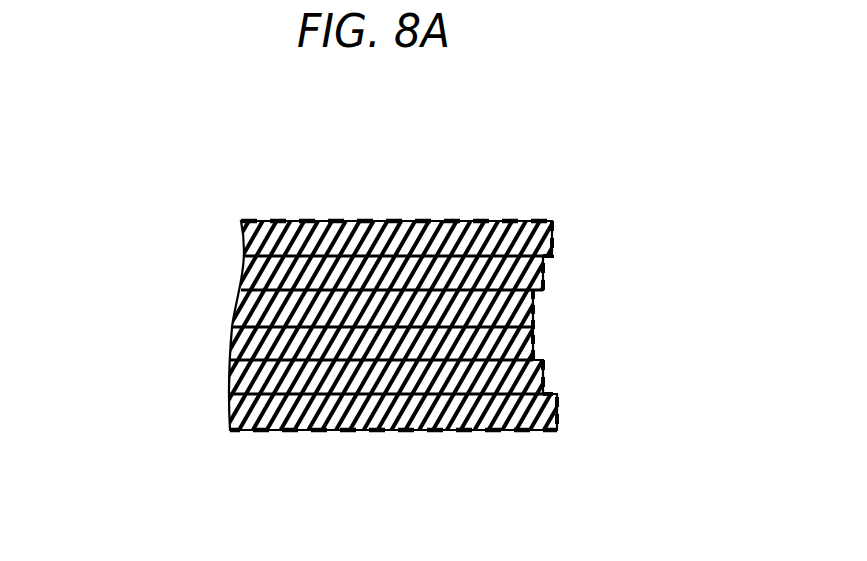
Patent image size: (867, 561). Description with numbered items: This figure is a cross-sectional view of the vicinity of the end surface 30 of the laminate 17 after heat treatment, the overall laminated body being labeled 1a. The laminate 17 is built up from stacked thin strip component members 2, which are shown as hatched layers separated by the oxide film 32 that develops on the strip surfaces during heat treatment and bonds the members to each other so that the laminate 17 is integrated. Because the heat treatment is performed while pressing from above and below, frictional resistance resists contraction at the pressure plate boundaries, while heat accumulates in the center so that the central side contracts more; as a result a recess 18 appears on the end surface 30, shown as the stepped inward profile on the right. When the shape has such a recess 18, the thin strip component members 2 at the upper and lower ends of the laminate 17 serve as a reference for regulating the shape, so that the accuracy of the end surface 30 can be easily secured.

The piezoelectric element 1a is at (81, 162).
The thin strip component member 2 is at (513, 221).
The laminate 17 is at (175, 223).
The recess 18 is at (540, 338).
The end surface 30 is at (607, 453).
The oxide film 32 is at (398, 221).